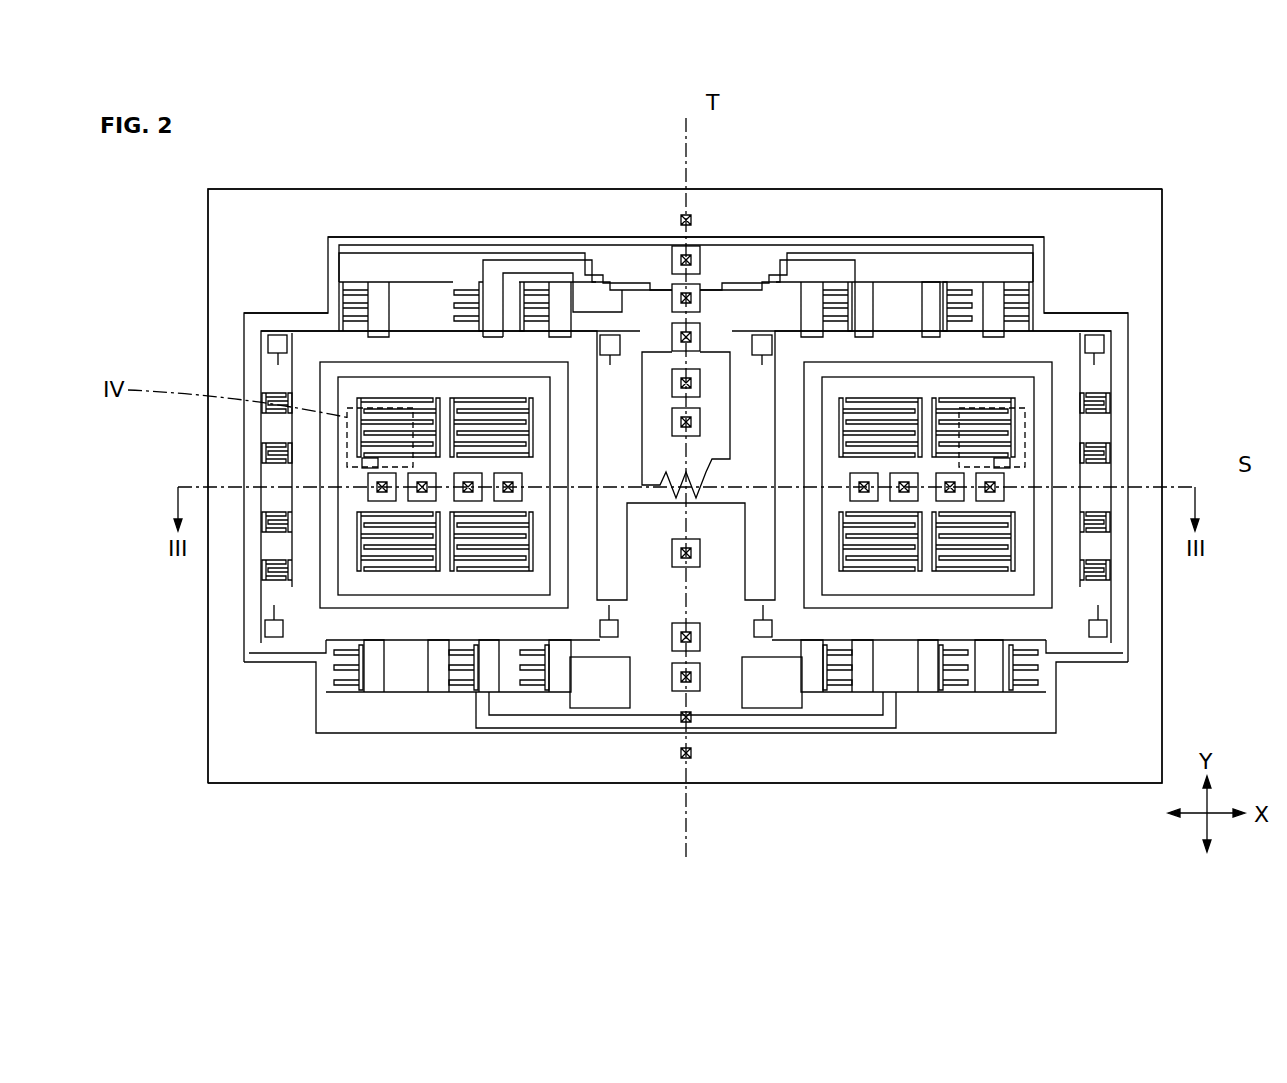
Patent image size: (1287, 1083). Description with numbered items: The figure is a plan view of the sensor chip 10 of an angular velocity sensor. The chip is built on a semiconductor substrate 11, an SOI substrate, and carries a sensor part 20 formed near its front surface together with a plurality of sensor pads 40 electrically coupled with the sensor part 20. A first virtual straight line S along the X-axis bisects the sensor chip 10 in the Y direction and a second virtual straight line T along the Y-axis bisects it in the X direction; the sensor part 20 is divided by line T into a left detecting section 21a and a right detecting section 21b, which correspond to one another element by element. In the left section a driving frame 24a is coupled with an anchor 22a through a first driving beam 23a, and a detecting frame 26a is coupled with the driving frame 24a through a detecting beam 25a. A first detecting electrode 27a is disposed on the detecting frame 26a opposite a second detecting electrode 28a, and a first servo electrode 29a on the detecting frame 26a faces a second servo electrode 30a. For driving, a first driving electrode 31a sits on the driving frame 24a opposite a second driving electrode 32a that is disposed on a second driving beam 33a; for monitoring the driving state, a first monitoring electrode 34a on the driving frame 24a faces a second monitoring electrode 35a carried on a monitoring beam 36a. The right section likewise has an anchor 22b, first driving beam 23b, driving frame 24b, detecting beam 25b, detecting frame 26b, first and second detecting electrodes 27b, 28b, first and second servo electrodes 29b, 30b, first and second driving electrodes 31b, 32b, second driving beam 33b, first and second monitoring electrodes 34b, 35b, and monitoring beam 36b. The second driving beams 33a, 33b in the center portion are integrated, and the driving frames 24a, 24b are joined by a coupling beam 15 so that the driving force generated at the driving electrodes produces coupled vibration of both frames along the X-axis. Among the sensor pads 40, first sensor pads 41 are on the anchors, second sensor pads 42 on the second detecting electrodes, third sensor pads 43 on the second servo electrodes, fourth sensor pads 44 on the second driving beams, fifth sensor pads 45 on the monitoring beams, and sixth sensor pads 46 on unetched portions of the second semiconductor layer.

The sensor chip 10 is at (1175, 131).
The semiconductor substrate 11 is at (1110, 188).
The coupling beam 15 is at (680, 381).
The sensor part 20 is at (1196, 190).
The detecting section 21a is at (512, 182).
The detecting section 21b is at (818, 182).
The anchor 22a is at (252, 350).
The anchor 22b is at (1120, 350).
The first driving beam 23a is at (255, 380).
The first driving beam 23b is at (1117, 380).
The driving frame 24a is at (262, 405).
The driving frame 24b is at (1110, 405).
The detecting beam 25a is at (330, 368).
The detecting beam 25b is at (1042, 368).
The detecting frame 26a is at (352, 382).
The detecting frame 26b is at (1020, 382).
The first detecting electrode 27a is at (300, 605).
The first detecting electrode 27b is at (1072, 605).
The second detecting electrode 28a is at (378, 560).
The second detecting electrode 28b is at (994, 560).
The first servo electrode 29a is at (362, 462).
The first servo electrode 29b is at (1010, 462).
The second servo electrode 30a is at (365, 505).
The second servo electrode 30b is at (1007, 505).
The first driving electrode 31a is at (280, 395).
The first driving electrode 31b is at (1092, 395).
The second driving electrode 32a is at (280, 440).
The second driving electrode 32b is at (1092, 440).
The second driving beam 33a is at (325, 297).
The second driving beam 33b is at (1047, 297).
The first monitoring electrode 34a is at (415, 285).
The first monitoring electrode 34b is at (957, 285).
The second monitoring electrode 35a is at (455, 290).
The second monitoring electrode 35b is at (917, 290).
The monitoring beam 36a is at (475, 300).
The monitoring beam 36b is at (892, 300).
The sensor pads 40 is at (1150, 188).
The first sensor pad 41 is at (684, 420).
The second sensor pad 42 is at (382, 500).
The third sensor pad 43 is at (422, 500).
The fourth sensor pad 44 is at (684, 258).
The fifth sensor pad 45 is at (690, 336).
The sixth sensor pad 46 is at (682, 296).